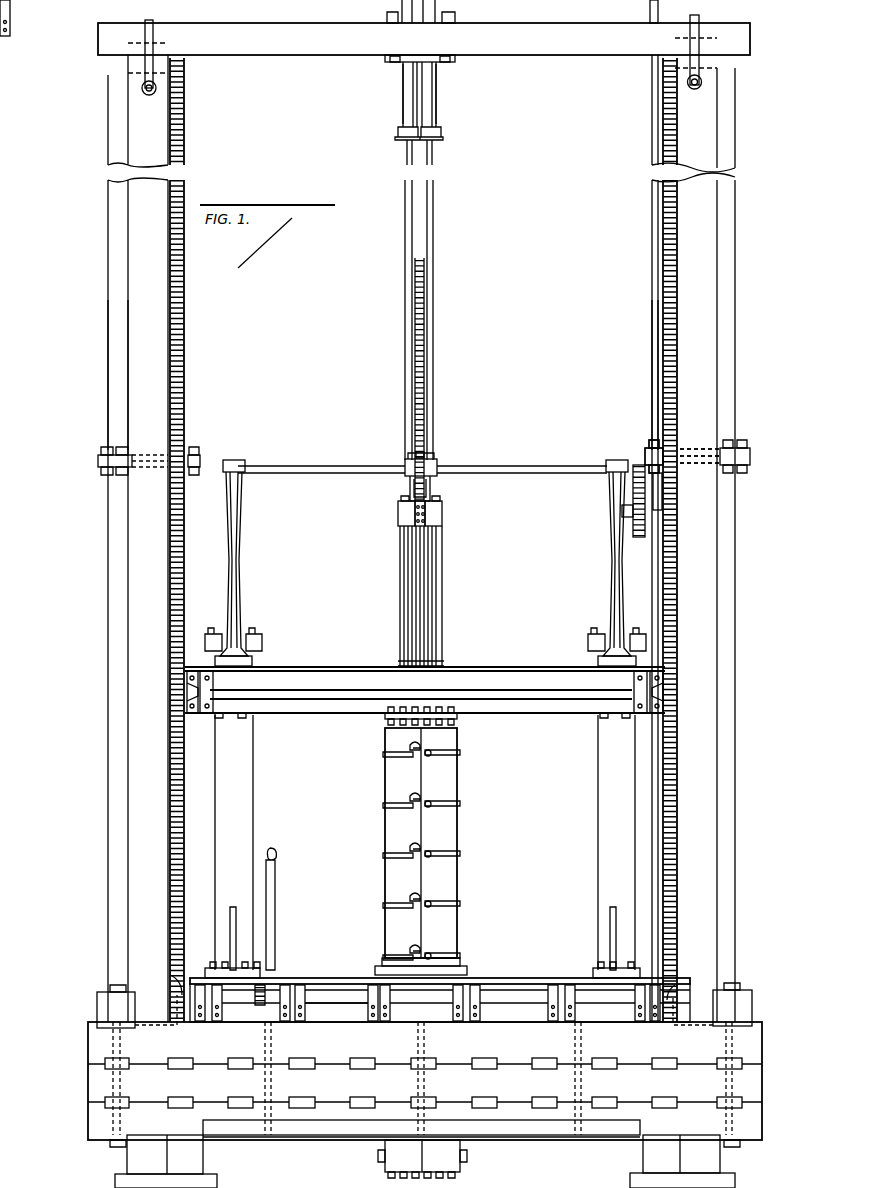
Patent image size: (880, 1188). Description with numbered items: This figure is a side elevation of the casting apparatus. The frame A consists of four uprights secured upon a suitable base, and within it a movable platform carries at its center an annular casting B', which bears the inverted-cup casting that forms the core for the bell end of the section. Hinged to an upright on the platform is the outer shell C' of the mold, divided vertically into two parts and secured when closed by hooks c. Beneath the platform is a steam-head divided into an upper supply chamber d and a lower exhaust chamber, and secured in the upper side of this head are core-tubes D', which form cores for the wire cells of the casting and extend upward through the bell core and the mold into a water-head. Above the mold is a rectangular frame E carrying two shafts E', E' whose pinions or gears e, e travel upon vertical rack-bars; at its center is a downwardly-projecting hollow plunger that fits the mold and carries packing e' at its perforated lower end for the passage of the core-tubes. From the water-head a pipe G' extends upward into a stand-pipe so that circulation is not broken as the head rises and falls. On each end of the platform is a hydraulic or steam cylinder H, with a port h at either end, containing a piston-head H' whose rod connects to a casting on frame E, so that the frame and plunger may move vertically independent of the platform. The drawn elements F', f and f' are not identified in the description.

The frame A is at (425, 621).
The annular casting B' is at (345, 511).
The outer shell of the mold C' is at (421, 851).
The hooks c is at (421, 851).
The core-tubes D' is at (429, 596).
The supply chamber d is at (440, 513).
The rectangular frame E is at (425, 661).
The shafts E' is at (425, 694).
The pinions or gears e is at (174, 691).
The packing e' is at (673, 689).
The column F' is at (106, 375).
The foot f is at (165, 985).
The foot f' is at (683, 982).
The pipe G' is at (420, 230).
The hydraulic or steam cylinder H is at (422, 846).
The piston-head H' is at (422, 477).
The port h is at (647, 483).